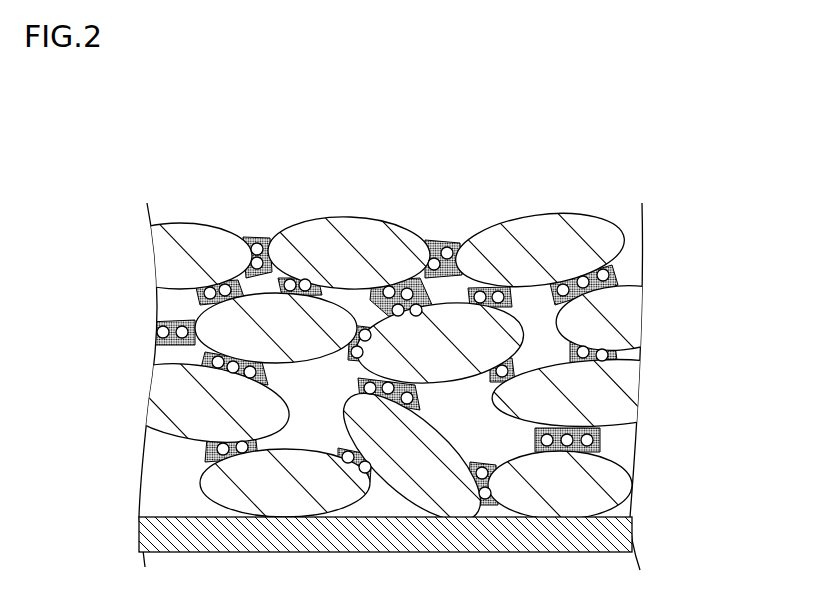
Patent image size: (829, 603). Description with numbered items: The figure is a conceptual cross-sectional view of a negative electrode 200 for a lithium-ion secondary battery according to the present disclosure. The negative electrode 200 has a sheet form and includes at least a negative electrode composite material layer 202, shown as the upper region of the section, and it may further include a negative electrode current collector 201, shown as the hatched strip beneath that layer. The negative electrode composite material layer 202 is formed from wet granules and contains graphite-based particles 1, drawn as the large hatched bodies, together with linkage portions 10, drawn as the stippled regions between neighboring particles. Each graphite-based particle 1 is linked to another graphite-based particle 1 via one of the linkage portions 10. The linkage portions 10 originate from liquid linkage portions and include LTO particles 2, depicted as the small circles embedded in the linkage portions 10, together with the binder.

The negative electrode 200 is at (164, 155).
The negative electrode composite material layer 202 is at (715, 197).
The negative electrode current collector 201 is at (633, 533).
The graphite-based particle 1 is at (604, 237).
The linkage portion 10 is at (612, 362).
The LTO particle 2 is at (576, 350).